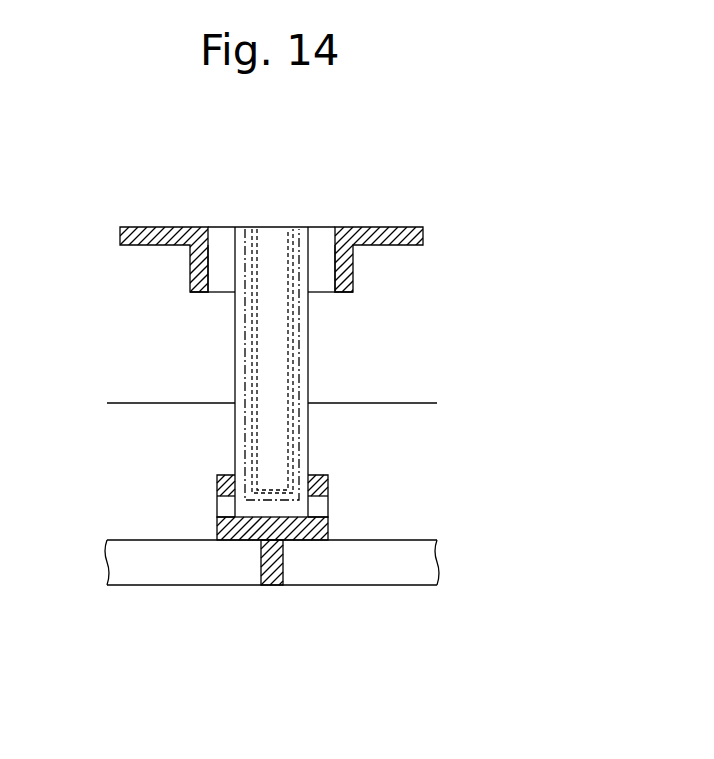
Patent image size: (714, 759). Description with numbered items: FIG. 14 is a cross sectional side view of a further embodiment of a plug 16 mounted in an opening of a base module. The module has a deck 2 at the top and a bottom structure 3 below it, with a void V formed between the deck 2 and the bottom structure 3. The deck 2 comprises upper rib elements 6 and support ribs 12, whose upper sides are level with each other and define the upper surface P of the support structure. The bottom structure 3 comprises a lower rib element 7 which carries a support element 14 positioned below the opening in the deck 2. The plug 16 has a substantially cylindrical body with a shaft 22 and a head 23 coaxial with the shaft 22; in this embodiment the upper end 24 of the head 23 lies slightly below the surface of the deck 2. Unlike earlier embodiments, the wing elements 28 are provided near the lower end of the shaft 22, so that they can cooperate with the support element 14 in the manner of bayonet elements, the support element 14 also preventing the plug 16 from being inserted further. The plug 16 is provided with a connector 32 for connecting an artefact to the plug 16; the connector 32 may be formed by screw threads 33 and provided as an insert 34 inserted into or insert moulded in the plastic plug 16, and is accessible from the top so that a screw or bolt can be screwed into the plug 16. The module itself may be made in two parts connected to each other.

The deck 2 is at (395, 227).
The bottom structure 3 is at (392, 596).
The upper rib elements 6 is at (197, 268).
The lower rib element 7 is at (272, 563).
The support ribs 12 is at (395, 235).
The support element 14 is at (318, 530).
The plug 16 is at (320, 358).
The shaft 22 is at (238, 418).
The head 23 is at (225, 247).
The upper end 24 is at (239, 220).
The wing elements 28 is at (222, 505).
The connector 32 is at (322, 220).
The screw threads 33 is at (262, 242).
The insert 34 is at (298, 282).
The upper surface P is at (166, 221).
The void V is at (155, 377).